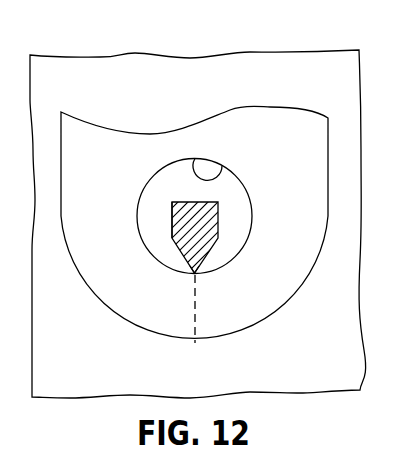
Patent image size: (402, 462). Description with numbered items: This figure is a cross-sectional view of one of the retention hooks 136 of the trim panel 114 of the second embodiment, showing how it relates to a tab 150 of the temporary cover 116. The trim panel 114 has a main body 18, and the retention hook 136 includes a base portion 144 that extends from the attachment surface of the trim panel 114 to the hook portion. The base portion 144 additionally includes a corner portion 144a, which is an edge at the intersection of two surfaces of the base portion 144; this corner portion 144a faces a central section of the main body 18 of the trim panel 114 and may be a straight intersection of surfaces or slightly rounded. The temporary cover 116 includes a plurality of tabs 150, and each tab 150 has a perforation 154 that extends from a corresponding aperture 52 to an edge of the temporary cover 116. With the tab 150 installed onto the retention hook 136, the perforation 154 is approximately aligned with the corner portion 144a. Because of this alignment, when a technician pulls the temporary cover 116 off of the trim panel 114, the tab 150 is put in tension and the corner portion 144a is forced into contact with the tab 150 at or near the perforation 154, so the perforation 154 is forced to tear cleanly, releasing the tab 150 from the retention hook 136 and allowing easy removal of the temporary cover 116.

The trim panel 114 is at (107, 83).
The temporary cover 116 is at (330, 147).
The main body 18 is at (78, 368).
The tab 150 is at (276, 288).
The aperture 52 is at (221, 171).
The base portion 144 is at (193, 243).
The retention hook 136 is at (172, 215).
The corner portion 144a is at (194, 274).
The perforation 154 is at (197, 313).